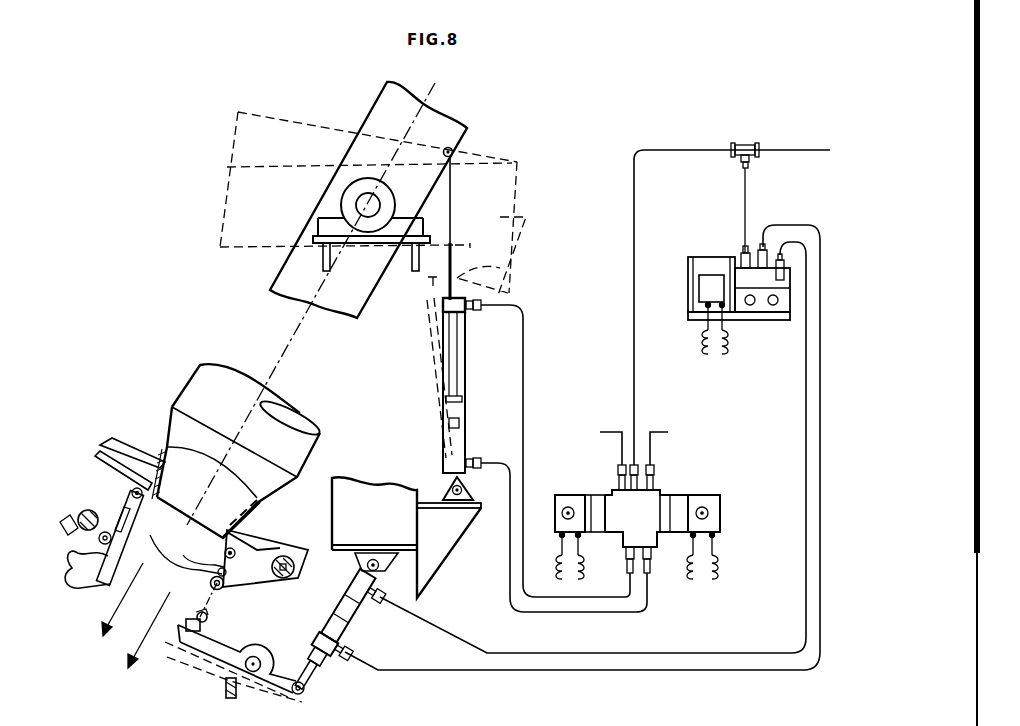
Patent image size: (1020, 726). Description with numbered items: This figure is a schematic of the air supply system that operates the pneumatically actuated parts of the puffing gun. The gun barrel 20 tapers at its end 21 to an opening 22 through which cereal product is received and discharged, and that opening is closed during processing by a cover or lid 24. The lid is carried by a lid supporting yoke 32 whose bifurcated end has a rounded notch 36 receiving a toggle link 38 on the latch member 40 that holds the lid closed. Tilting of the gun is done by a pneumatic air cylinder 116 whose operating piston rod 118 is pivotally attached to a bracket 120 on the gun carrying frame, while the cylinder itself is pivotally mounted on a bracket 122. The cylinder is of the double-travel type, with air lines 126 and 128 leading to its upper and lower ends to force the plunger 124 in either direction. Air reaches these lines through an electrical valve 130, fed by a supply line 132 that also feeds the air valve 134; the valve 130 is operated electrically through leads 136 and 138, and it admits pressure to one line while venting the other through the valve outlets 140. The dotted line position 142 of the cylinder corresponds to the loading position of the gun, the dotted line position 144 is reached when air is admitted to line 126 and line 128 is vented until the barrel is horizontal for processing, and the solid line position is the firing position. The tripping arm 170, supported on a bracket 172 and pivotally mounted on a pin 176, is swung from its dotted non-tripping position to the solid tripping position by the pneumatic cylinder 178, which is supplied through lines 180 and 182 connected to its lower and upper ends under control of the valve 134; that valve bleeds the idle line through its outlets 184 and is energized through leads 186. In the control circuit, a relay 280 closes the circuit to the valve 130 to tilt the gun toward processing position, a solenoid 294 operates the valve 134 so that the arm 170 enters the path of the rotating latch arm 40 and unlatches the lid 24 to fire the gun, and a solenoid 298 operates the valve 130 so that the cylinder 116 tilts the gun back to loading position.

The hopper 20 is at (187, 377).
The tapered end 21 is at (165, 447).
The opening 22 is at (176, 508).
The lid 24 is at (126, 590).
The lid supporting yoke 32 is at (85, 588).
The rounded notch 36 is at (62, 580).
The toggle link 38 is at (224, 586).
The latch member 40 is at (207, 624).
The pneumatic air cylinder 116 is at (466, 386).
The operating piston rod 118 is at (452, 183).
The bracket 120 is at (455, 150).
The bracket 122 is at (447, 544).
The plunger 124 is at (470, 311).
The air line 126 is at (521, 314).
The air line 128 is at (487, 462).
The electrical valve 130 is at (663, 493).
The supply line 132 is at (772, 147).
The air valve 134 is at (707, 257).
The lead 136 is at (561, 577).
The lead 138 is at (704, 578).
The valve outlets 140 is at (681, 420).
The dotted line position 142 is at (432, 284).
The dotted line position 144 is at (459, 247).
The tripping arm 170 is at (234, 647).
The bracket 172 is at (141, 645).
The pin 176 is at (259, 659).
The pneumatic cylinder 178 is at (357, 623).
The air line 180 is at (549, 671).
The air line 182 is at (512, 654).
The outlets 184 is at (771, 306).
The leads 186 is at (720, 348).
The relay 280 is at (713, 510).
The solenoid 294 is at (700, 287).
The solenoid 298 is at (572, 494).